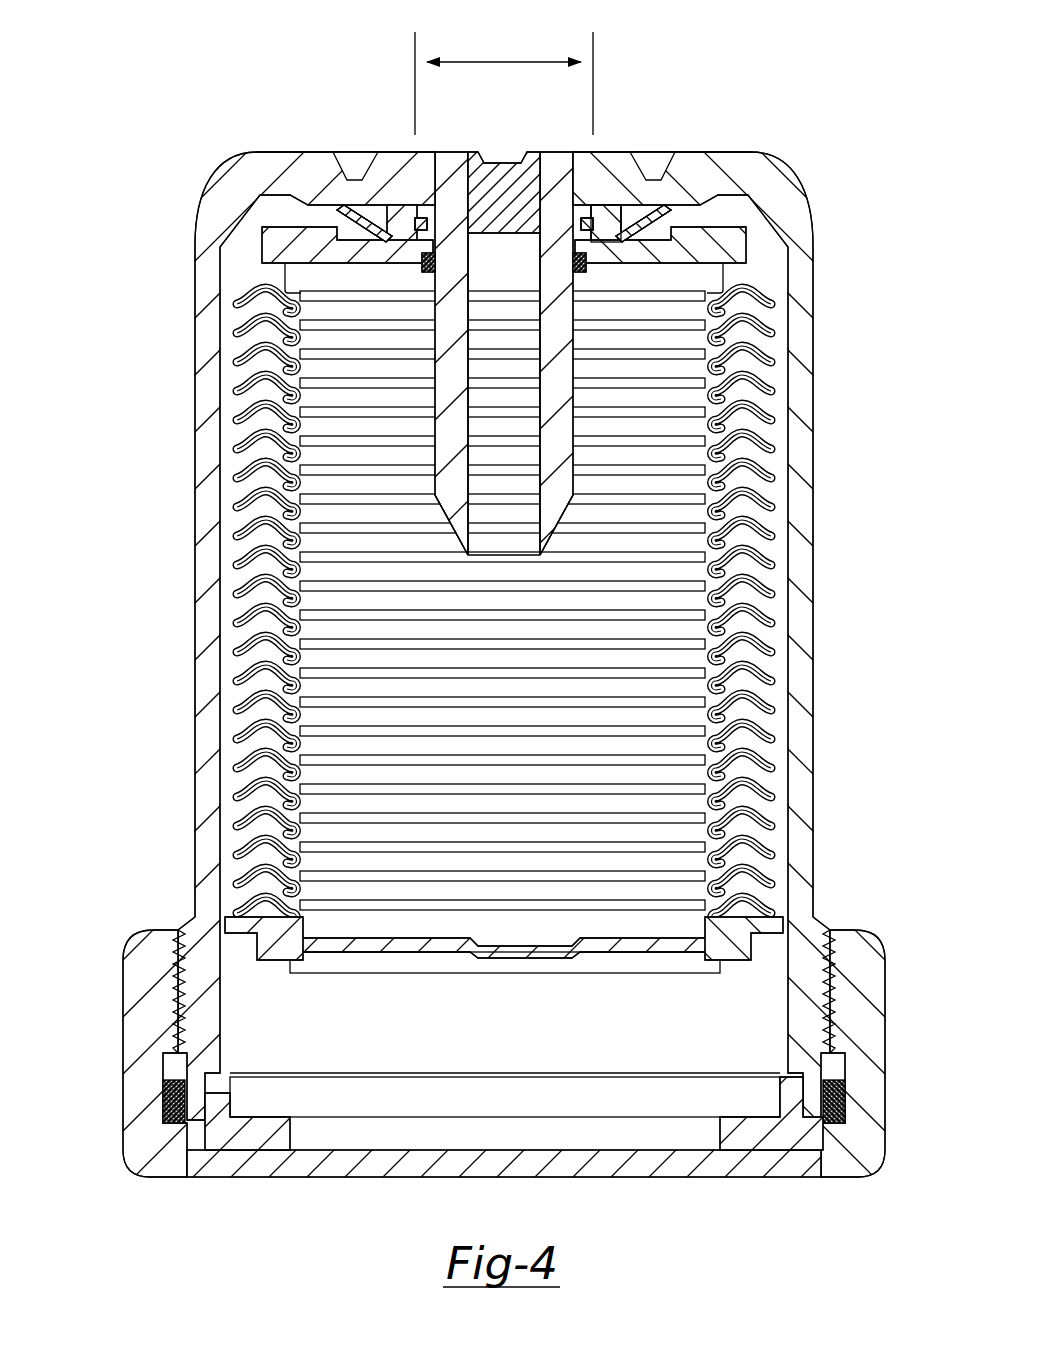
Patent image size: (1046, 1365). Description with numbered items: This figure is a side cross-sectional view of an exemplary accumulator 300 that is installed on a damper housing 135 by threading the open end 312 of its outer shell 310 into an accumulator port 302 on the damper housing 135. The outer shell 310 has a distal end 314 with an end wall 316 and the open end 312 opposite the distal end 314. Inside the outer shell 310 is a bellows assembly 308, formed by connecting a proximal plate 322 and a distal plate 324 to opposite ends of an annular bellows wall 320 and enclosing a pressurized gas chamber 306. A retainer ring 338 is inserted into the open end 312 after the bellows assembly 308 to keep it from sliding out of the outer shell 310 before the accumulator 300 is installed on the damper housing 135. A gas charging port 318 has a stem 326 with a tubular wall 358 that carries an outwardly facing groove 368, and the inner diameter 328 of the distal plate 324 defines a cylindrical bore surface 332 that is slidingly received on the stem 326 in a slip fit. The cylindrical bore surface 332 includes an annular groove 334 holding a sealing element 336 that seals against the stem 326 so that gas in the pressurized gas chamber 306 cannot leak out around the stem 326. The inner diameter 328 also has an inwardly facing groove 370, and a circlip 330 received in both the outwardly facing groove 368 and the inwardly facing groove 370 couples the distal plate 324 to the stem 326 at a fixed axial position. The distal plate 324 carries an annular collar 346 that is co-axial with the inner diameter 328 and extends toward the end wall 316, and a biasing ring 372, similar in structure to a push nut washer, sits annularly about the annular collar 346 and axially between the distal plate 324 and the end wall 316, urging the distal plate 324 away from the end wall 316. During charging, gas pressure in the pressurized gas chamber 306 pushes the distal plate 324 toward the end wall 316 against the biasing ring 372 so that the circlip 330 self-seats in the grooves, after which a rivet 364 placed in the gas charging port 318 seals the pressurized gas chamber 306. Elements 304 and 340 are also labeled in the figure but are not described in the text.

The damper housing 135 is at (145, 1010).
The accumulator 300 is at (800, 119).
The accumulator port 302 is at (618, 1138).
The lower plate 304 is at (735, 1033).
The pressurized gas chamber 306 is at (630, 685).
The bellows assembly 308 is at (277, 963).
The outer shell 310 is at (207, 520).
The open end 312 is at (802, 1152).
The distal end 314 is at (273, 150).
The end wall 316 is at (341, 190).
The gas charging port 318 is at (505, 525).
The annular bellows wall 320 is at (800, 520).
The proximal plate 322 is at (622, 952).
The distal plate 324 is at (300, 262).
The stem 326 is at (562, 530).
The inner diameter 328 is at (503, 62).
The circlip 330 is at (418, 216).
The cylindrical bore surface 332 is at (410, 243).
The annular groove 334 is at (735, 327).
The sealing element 336 is at (424, 258).
The retainer ring 338 is at (245, 1147).
The threads 340 is at (828, 1040).
The annular collar 346 is at (600, 214).
The tubular wall 358 is at (560, 370).
The rivet 364 is at (495, 170).
The outwardly facing groove 368 is at (579, 225).
The inwardly facing groove 370 is at (733, 265).
The biasing ring 372 is at (665, 218).